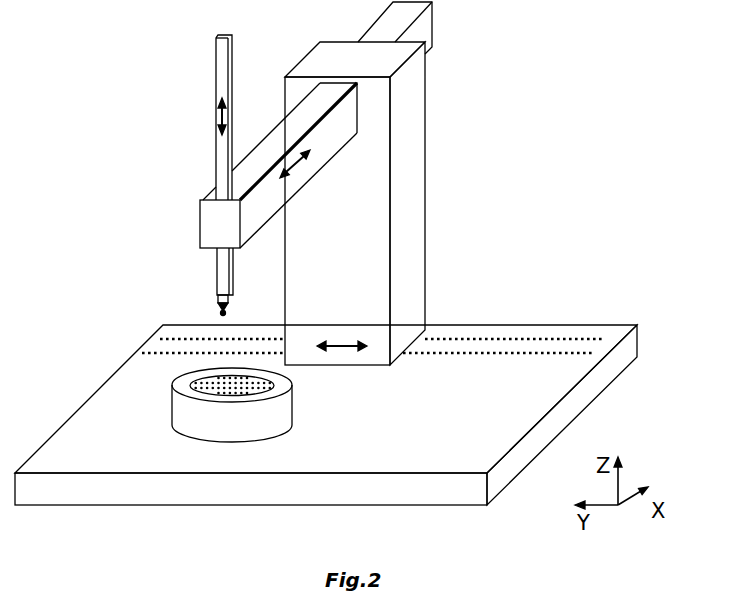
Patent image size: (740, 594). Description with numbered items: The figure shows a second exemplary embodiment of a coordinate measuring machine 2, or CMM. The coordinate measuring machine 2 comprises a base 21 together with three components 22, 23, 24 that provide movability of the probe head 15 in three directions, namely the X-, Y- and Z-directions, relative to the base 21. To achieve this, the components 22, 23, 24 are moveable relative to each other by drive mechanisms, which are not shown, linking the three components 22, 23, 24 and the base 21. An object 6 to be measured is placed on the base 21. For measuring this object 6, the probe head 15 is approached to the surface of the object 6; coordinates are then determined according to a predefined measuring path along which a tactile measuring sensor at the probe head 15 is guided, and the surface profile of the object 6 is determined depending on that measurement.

The coordinate measuring machine 2 is at (461, 28).
The object 6 is at (181, 400).
The probe head 15 is at (218, 302).
The base 21 is at (326, 398).
The component 22 is at (388, 203).
The component 23 is at (280, 130).
The component 24 is at (184, 165).